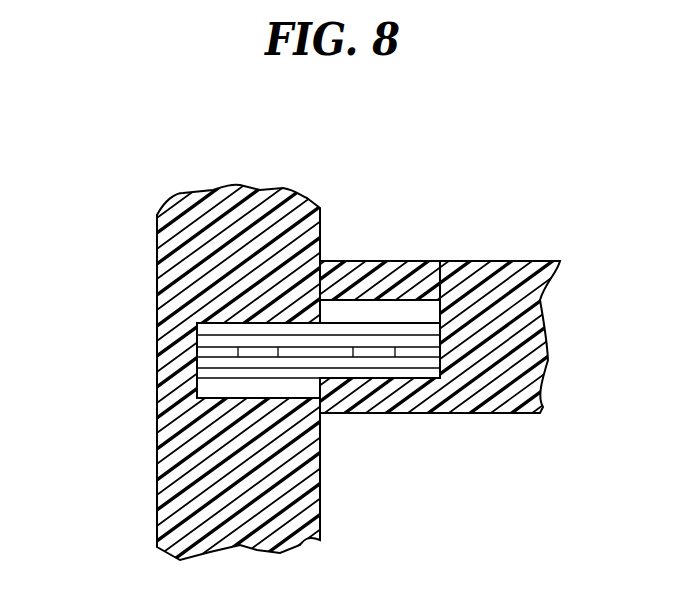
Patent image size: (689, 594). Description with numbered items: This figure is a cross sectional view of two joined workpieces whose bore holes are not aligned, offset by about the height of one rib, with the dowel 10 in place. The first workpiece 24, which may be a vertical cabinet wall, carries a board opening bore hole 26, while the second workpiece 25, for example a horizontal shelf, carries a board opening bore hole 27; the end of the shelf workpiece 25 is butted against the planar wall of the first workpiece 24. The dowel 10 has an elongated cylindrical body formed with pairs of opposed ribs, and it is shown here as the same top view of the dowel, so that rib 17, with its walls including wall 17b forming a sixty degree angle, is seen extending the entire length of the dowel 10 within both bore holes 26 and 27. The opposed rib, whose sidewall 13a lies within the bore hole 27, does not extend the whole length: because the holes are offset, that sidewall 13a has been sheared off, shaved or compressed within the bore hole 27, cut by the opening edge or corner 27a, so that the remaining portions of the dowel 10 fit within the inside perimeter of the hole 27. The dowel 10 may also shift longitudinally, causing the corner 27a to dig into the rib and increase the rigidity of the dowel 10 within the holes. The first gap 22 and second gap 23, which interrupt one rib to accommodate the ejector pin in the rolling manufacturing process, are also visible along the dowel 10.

The dowel 10 is at (390, 327).
The rib sidewall 13a is at (212, 373).
The rib 17 is at (443, 343).
The rib wall 17b is at (432, 328).
The first gap 22 is at (382, 350).
The second gap 23 is at (250, 343).
The first workpiece 24 is at (157, 450).
The workpiece 25 is at (545, 260).
The bore hole 26 is at (249, 346).
The bore hole 27 is at (342, 298).
The corner 27a is at (333, 380).